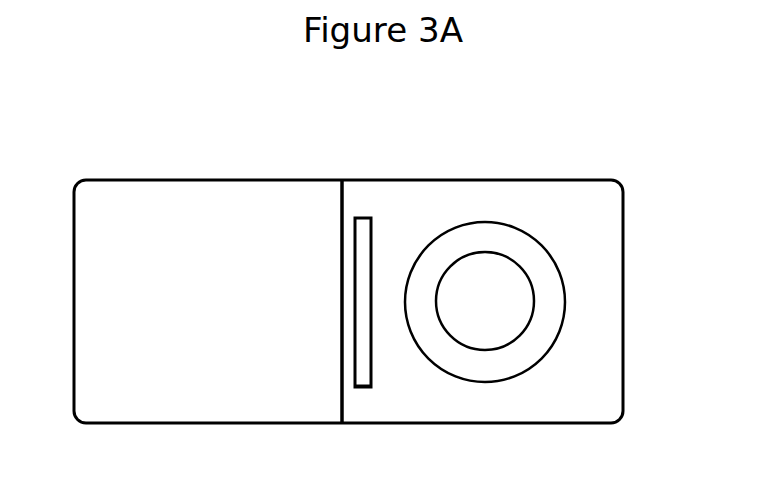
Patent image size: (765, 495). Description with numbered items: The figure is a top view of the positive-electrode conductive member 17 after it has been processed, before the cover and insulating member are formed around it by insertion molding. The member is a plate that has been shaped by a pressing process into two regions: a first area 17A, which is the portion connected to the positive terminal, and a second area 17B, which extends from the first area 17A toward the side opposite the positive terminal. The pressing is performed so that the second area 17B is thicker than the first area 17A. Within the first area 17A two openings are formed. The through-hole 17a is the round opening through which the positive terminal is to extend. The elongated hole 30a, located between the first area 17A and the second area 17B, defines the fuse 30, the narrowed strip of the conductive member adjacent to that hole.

The positive-electrode conductive member 17 is at (643, 152).
The first area 17A is at (506, 180).
The second area 17B is at (215, 180).
The through-hole 17a is at (465, 285).
The fuse 30 is at (363, 208).
The hole 30a is at (363, 357).